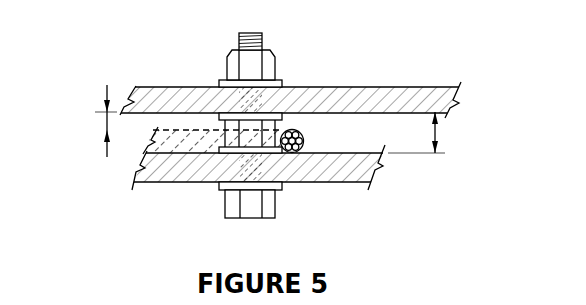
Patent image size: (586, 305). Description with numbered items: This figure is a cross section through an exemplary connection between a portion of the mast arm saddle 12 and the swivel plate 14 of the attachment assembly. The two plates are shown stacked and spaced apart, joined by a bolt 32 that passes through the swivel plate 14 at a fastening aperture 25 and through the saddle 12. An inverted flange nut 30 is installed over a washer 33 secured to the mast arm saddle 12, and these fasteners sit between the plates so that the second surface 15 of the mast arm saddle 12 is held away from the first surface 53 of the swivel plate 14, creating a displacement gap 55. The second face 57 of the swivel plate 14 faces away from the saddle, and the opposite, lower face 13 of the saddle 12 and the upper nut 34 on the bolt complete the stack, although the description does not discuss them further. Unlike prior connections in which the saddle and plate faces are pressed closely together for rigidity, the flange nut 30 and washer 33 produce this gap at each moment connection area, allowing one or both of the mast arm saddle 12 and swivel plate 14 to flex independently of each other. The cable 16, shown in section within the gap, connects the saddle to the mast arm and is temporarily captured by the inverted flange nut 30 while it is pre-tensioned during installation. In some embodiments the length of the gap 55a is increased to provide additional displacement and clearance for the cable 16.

The mast arm saddle 12 is at (333, 173).
The bottom surface of lower panel 13 is at (317, 183).
The swivel plate 14 is at (417, 100).
The second surface of the mast arm saddle 15 is at (339, 153).
The cable 16 is at (303, 137).
The fastening aperture 25 is at (265, 103).
The inverted flange nut 30 is at (223, 115).
The bolt 32 is at (232, 205).
The washer 33 is at (277, 85).
The upper nut 34 is at (268, 67).
The first surface of the swivel plate 53 is at (416, 132).
The displacement gap 55 is at (435, 133).
The gap 55a is at (107, 117).
The second face of the swivel plate 57 is at (377, 88).